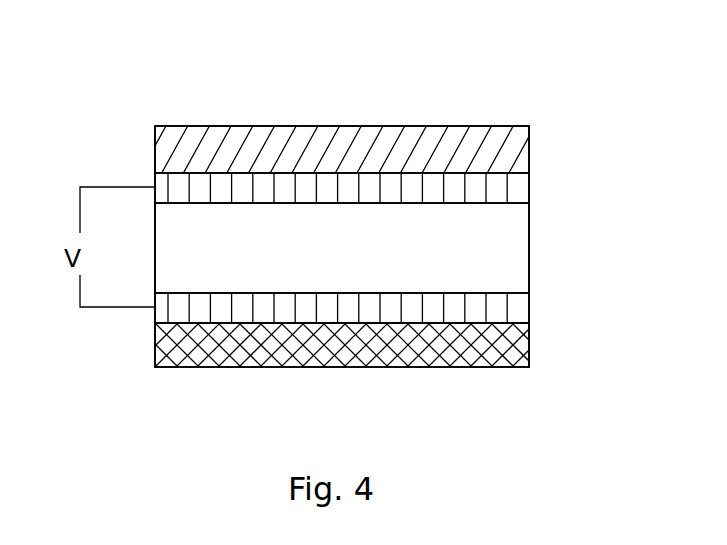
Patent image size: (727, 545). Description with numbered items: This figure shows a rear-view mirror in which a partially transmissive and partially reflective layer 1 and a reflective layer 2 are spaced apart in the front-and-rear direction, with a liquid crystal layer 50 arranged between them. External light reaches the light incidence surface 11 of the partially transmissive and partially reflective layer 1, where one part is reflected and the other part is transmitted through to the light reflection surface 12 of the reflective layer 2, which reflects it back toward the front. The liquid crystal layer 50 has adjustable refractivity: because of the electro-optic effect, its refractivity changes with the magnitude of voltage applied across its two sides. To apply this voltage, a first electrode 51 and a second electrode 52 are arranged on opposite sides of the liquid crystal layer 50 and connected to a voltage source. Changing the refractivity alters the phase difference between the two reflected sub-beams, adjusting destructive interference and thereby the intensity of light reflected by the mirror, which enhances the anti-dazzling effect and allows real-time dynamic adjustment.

The partially transmissive and partially reflective layer 1 is at (530, 142).
The light incidence surface 11 is at (412, 126).
The first electrode 51 is at (530, 187).
The liquid crystal layer 50 is at (530, 253).
The second electrode 52 is at (530, 308).
The reflective layer 2 is at (530, 352).
The light reflection surface 12 is at (373, 323).